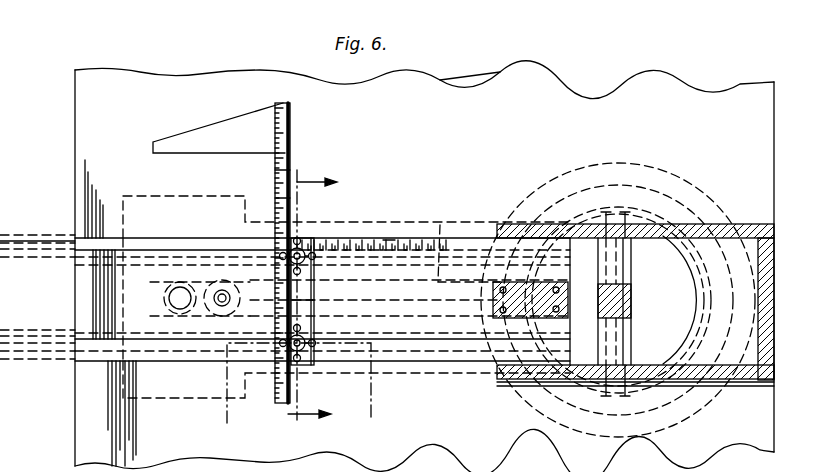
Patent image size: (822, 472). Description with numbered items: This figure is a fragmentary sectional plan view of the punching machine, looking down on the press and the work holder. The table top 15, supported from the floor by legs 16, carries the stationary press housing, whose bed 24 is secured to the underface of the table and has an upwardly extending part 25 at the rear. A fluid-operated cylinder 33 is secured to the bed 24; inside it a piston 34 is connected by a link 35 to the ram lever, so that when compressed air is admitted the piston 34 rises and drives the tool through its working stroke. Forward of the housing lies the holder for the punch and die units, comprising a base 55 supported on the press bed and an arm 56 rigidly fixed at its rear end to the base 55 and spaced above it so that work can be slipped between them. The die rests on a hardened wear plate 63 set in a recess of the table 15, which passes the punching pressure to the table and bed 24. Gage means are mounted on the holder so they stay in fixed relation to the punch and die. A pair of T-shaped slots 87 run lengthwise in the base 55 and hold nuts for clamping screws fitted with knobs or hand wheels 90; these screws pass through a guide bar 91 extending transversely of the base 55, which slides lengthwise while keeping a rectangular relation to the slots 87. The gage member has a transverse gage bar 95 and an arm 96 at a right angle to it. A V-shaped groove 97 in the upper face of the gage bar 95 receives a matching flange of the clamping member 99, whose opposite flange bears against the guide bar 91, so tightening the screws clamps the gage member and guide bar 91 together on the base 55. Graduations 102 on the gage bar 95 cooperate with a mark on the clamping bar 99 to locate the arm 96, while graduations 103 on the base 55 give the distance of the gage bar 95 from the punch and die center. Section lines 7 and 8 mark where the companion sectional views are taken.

The table top or plate 15 is at (545, 65).
The arm of the gage member 96 is at (192, 130).
The V-shaped groove 97 is at (292, 128).
The section line 7 is at (312, 299).
The gage bar 95 is at (274, 173).
The bed 24 is at (142, 200).
The base of the holder 55 is at (80, 272).
The T-shaped slots 87 is at (80, 298).
The wear plate 63 is at (175, 275).
The legs 16 is at (168, 300).
The graduations 102 is at (290, 198).
The graduations 103 is at (388, 240).
The arm 56 is at (452, 225).
The upwardly extending part 25 is at (528, 212).
The cylinder 33 is at (670, 197).
The piston 34 is at (634, 300).
The link 35 is at (631, 308).
The knobs or hand wheels 90 is at (300, 273).
The guide bar 91 is at (308, 299).
The clamping member or bar 99 is at (318, 295).
The section line 8 is at (296, 392).